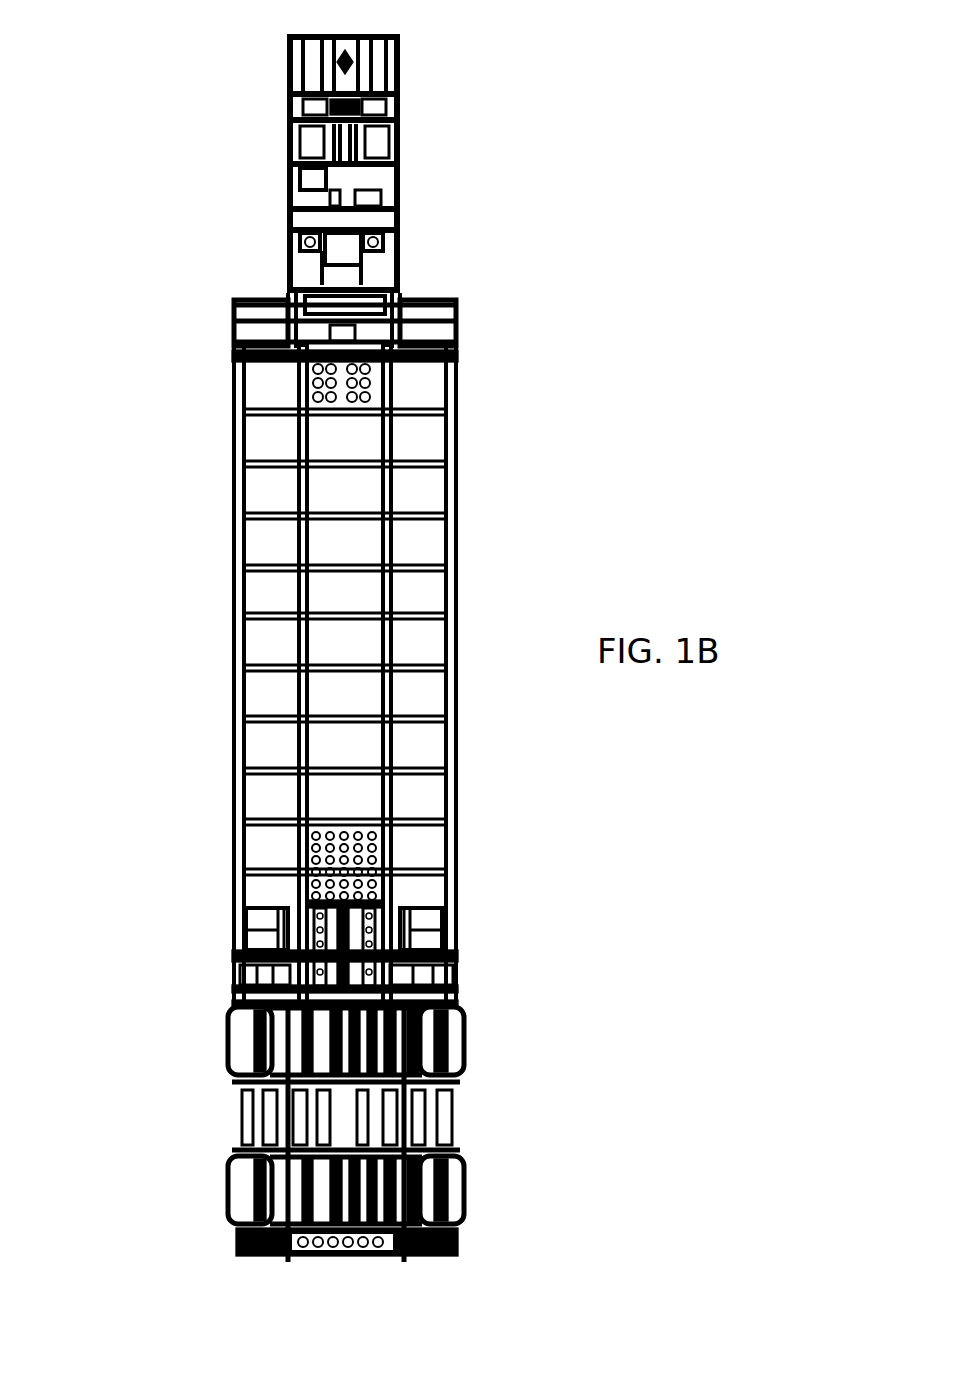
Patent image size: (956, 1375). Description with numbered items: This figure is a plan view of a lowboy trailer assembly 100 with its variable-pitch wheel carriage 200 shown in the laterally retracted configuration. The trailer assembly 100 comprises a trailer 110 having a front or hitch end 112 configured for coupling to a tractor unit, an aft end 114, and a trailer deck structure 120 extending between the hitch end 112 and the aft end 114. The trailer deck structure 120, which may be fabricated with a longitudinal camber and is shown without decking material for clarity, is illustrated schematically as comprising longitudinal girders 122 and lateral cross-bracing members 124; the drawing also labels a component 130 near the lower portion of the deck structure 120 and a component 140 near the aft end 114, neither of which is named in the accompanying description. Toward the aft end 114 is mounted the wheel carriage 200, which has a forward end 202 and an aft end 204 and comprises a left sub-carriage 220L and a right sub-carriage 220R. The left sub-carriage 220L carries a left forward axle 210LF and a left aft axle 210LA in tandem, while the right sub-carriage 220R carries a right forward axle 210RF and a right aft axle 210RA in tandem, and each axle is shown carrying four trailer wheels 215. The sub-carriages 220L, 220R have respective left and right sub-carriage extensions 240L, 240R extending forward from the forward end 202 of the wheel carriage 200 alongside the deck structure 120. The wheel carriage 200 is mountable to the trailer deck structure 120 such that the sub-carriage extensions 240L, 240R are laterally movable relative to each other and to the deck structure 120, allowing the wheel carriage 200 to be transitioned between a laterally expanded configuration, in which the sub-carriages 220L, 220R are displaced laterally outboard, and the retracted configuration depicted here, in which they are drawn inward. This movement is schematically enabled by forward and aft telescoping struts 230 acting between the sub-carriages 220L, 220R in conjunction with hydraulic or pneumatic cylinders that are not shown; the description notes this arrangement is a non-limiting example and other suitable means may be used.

The lowboy trailer assembly 100 is at (534, 70).
The trailer 110 is at (476, 403).
The front end 112 is at (285, 55).
The aft end 114 is at (235, 985).
The trailer deck structure 120 is at (458, 554).
The longitudinal girders 122 is at (298, 591).
The lateral cross-bracing members 124 is at (330, 661).
The center guide column 130 is at (435, 897).
The mast base plate 140 is at (433, 950).
The left sub-carriage extension 240L is at (262, 930).
The right sub-carriage extension 240R is at (412, 952).
The wheel carriage 200 is at (518, 1060).
The forward end 202 is at (228, 1037).
The aft end 204 is at (222, 1226).
The left forward axle 210LF is at (225, 1012).
The right forward axle 210RF is at (455, 1005).
The left aft axle 210LA is at (228, 1167).
The right aft axle 210RA is at (420, 1182).
The trailer wheels 215 is at (238, 1206).
The left sub-carriage 220L is at (270, 1122).
The right sub-carriage 220R is at (248, 1062).
The telescoping struts 230 is at (285, 1085).